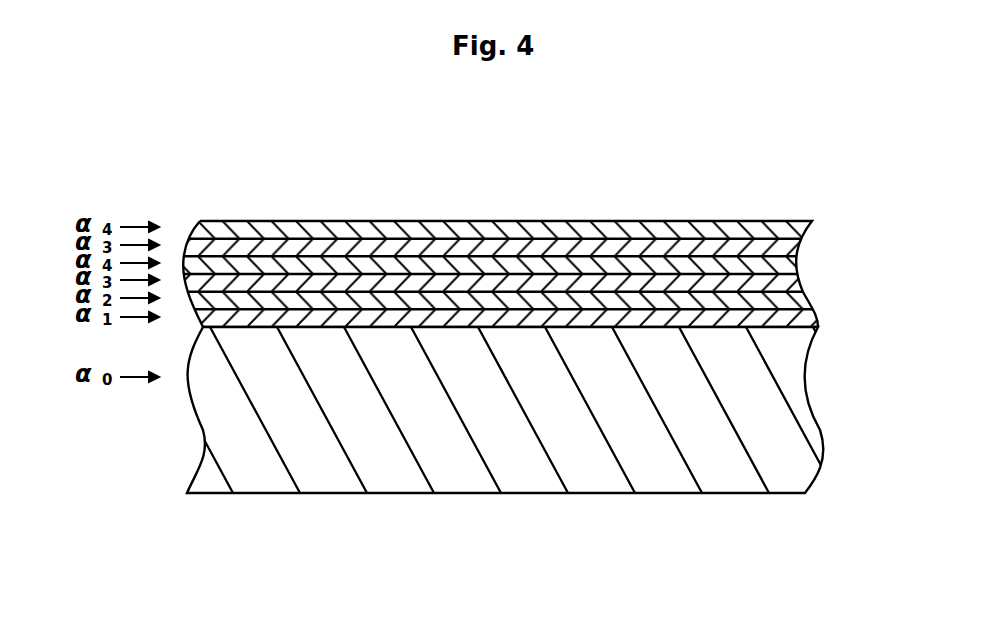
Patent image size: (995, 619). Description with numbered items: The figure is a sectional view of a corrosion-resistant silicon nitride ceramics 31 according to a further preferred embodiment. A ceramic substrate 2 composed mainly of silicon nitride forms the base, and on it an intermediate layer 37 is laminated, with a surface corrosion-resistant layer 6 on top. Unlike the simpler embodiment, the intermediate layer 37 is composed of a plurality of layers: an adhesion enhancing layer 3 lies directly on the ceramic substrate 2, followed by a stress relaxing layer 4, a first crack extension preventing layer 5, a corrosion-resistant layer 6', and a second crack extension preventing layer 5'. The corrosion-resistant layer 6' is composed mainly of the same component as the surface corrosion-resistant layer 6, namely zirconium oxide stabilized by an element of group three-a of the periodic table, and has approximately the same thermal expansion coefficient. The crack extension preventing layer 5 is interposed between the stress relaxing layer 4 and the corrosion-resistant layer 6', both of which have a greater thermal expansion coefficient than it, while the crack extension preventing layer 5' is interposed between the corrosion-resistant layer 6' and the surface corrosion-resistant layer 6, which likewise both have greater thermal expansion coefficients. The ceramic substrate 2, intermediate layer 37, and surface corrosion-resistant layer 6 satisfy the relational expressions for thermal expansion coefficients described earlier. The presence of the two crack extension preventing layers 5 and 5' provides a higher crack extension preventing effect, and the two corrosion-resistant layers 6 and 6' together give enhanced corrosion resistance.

The ceramic substrate 2 is at (792, 378).
The adhesion enhancing layer 3 is at (818, 328).
The stress relaxing layer 4 is at (808, 303).
The crack extension preventing layer 5 is at (526, 281).
The corrosion-resistant layer 6' is at (530, 260).
The crack extension preventing layer 5' is at (530, 240).
The surface corrosion-resistant layer 6 is at (526, 219).
The corrosion-resistant silicon nitride ceramics 31 is at (677, 171).
The intermediate layer 37 is at (897, 236).